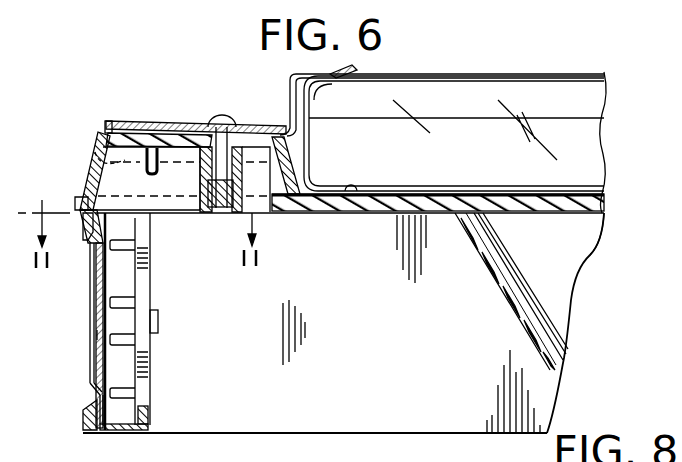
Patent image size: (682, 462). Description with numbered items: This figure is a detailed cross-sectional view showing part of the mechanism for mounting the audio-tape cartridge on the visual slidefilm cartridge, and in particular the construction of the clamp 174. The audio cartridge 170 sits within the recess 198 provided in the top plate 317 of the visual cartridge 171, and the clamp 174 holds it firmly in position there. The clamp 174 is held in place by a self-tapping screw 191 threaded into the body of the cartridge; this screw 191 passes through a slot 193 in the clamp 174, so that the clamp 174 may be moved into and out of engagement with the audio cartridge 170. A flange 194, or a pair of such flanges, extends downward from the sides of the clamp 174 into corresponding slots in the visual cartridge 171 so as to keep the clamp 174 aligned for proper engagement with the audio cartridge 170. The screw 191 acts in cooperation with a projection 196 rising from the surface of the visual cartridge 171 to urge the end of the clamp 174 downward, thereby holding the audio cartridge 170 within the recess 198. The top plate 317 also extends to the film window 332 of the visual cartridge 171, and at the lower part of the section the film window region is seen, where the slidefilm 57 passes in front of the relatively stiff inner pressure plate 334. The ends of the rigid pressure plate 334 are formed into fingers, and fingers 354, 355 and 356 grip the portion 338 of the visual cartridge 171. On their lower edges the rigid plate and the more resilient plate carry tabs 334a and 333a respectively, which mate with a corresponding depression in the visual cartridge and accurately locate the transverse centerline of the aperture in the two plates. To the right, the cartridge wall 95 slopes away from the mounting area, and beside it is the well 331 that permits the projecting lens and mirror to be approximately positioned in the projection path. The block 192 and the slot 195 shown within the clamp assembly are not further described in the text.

The audio cartridge 170 is at (455, 142).
The visual cartridge 171 is at (372, 441).
The clamp 174 is at (166, 122).
The self-tapping screw 191 is at (218, 117).
The spacer block 192 is at (214, 213).
The slot 193 is at (273, 130).
The flange 194 is at (96, 155).
The slot 195 is at (205, 186).
The projection 196 is at (132, 127).
The recess 198 is at (351, 205).
The top plate 317 is at (602, 206).
The side wall 95 is at (596, 244).
The well 331 is at (553, 291).
The film window 332 is at (82, 290).
The inner pressure plate 334 is at (120, 277).
The finger 354 is at (137, 292).
The finger 355 is at (159, 325).
The portion of visual cartridge 338 is at (148, 355).
The finger 356 is at (130, 372).
The slidefilm 57 is at (97, 330).
The tab 333a is at (100, 438).
The tab 334a is at (108, 428).